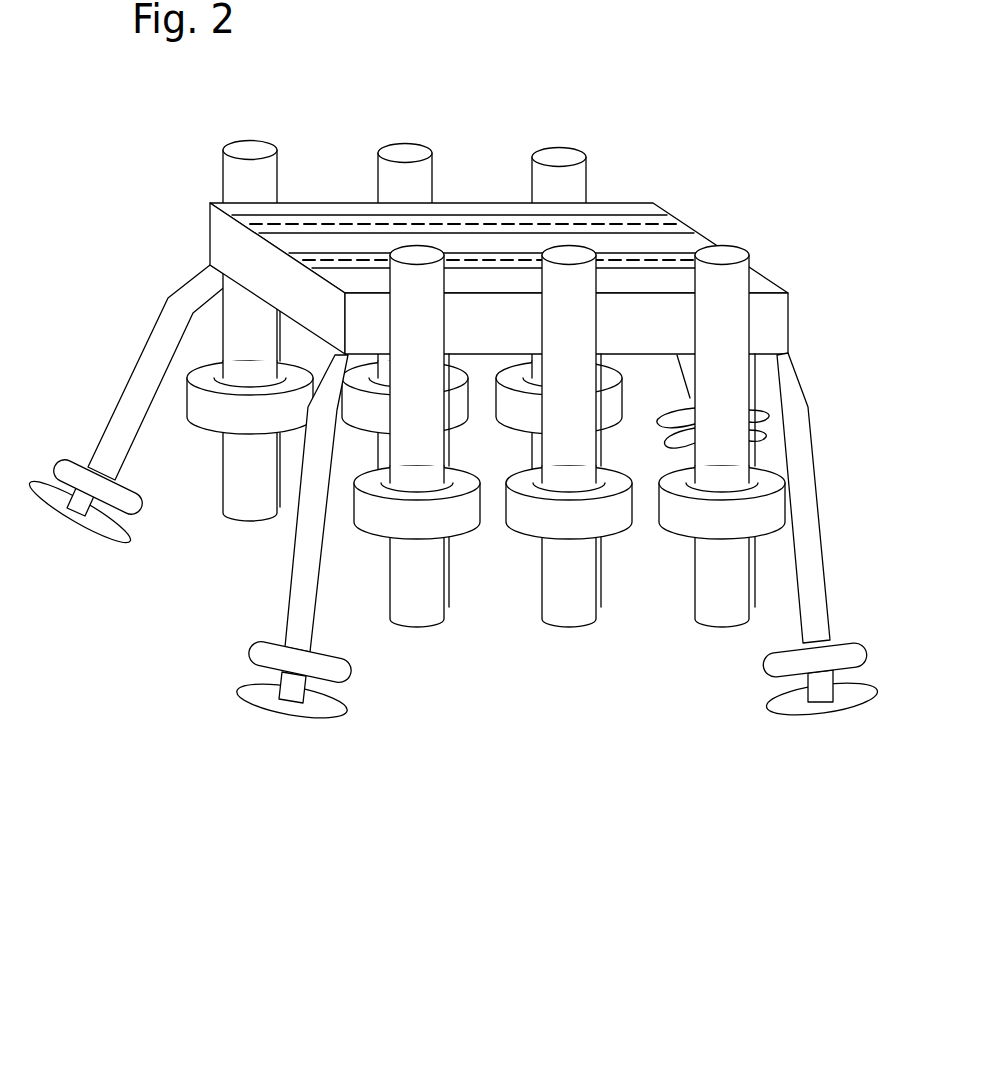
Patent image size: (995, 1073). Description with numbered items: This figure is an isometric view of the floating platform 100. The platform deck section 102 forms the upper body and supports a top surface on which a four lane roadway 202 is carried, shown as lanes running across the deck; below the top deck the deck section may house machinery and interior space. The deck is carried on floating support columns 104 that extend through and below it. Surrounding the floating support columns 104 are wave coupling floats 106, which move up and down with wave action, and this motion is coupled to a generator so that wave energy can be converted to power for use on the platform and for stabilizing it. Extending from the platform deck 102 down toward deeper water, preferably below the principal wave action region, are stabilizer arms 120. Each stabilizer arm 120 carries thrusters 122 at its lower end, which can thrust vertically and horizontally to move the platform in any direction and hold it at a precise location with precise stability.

The platform 100 is at (232, 815).
The platform deck section 102 is at (450, 203).
The floating support columns 104 is at (272, 143).
The wave coupling floats 106 is at (463, 525).
The stabilizer arm 120 is at (295, 550).
The thrusters 122 is at (355, 668).
The roadway 202 is at (636, 220).